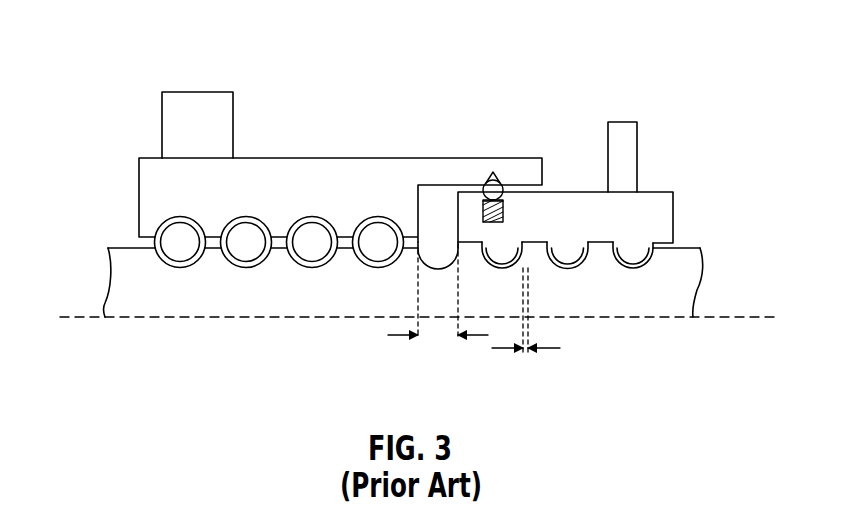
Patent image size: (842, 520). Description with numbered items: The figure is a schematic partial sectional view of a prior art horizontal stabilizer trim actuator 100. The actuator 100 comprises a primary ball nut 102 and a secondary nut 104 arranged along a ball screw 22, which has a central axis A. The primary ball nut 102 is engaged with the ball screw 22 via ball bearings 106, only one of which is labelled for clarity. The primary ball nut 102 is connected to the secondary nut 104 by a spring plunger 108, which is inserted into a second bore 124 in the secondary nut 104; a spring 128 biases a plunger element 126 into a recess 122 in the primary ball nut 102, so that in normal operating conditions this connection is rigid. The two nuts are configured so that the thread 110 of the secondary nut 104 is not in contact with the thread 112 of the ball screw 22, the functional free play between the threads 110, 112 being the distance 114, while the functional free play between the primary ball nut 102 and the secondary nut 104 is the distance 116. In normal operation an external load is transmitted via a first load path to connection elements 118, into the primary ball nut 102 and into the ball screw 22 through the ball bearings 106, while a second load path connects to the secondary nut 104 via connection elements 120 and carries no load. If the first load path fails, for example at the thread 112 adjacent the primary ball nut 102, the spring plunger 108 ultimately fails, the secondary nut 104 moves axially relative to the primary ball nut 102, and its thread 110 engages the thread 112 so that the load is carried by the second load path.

The horizontal stabilizer trim actuator 100 is at (408, 219).
The primary ball nut 102 is at (148, 177).
The secondary nut 104 is at (667, 200).
The ball bearings 106 is at (177, 237).
The spring plunger 108 is at (475, 134).
The thread of the secondary nut 110 is at (625, 248).
The thread of the ball screw 112 is at (632, 270).
The distance 114 is at (497, 350).
The distance 116 is at (403, 338).
The connection elements 118 is at (168, 120).
The connection elements 120 is at (618, 157).
The recess 122 is at (483, 175).
The second bore 124 is at (505, 200).
The plunger element 126 is at (497, 185).
The spring 128 is at (483, 203).
The ball screw 22 is at (233, 308).
The central axis A is at (60, 317).